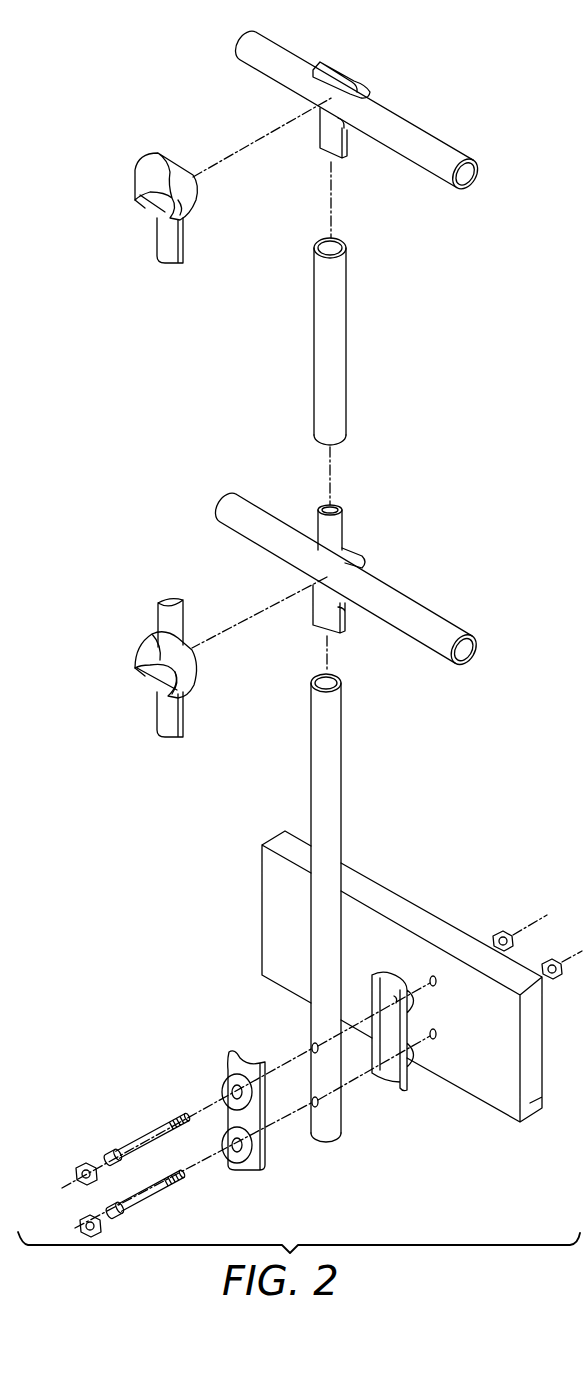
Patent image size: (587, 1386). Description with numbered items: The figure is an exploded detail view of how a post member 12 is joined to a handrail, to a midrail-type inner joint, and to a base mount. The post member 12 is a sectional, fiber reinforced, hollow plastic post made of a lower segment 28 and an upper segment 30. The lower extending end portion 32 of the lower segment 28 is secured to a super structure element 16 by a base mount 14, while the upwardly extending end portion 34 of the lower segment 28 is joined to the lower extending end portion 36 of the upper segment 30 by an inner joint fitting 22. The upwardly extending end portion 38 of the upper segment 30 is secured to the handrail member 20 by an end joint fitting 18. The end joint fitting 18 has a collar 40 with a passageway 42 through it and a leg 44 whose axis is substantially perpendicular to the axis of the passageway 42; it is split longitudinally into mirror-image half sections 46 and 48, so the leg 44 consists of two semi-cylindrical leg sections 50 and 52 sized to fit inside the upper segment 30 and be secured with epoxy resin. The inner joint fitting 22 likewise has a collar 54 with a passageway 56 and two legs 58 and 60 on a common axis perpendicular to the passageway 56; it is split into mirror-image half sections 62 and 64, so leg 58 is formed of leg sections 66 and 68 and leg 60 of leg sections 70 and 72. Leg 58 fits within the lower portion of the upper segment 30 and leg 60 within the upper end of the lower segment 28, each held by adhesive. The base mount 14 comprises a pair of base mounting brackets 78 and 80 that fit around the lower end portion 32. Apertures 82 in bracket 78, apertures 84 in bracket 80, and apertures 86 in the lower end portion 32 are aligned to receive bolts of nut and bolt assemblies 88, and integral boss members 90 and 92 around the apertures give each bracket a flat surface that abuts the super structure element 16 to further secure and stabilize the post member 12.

The post member 12 is at (386, 814).
The base mount 14 is at (394, 1141).
The super structure element 16 is at (402, 913).
The end joint fitting 18 is at (374, 72).
The handrail member 20 is at (445, 155).
The inner joint fitting 22 is at (373, 524).
The lower segment 28 is at (318, 798).
The upper segment 30 is at (325, 353).
The lower extending end portion 32 is at (338, 1122).
The upwardly extending end portion 34 is at (332, 698).
The lower extending end portion 36 is at (347, 428).
The upwardly extending end portion 38 is at (335, 277).
The collar 40 is at (333, 62).
The passageway 42 is at (185, 200).
The leg 44 is at (183, 247).
The half section 46 is at (345, 128).
The half section 48 is at (155, 217).
The leg section 50 is at (337, 160).
The leg section 52 is at (170, 267).
The collar 54 is at (310, 580).
The passageway 56 is at (182, 682).
The leg 58 is at (193, 647).
The leg 60 is at (317, 623).
The half section 62 is at (363, 567).
The half section 64 is at (137, 668).
The leg section 66 is at (318, 512).
The leg section 68 is at (170, 600).
The leg section 70 is at (333, 630).
The leg section 72 is at (170, 740).
The base mounting bracket 78 is at (405, 1080).
The base mounting bracket 80 is at (230, 1117).
The apertures 82 is at (397, 998).
The apertures 84 is at (237, 1092).
The apertures 86 is at (310, 1098).
The nut and bolt assemblies 88 is at (147, 1195).
The boss members 90 is at (418, 1000).
The boss members 92 is at (230, 1076).